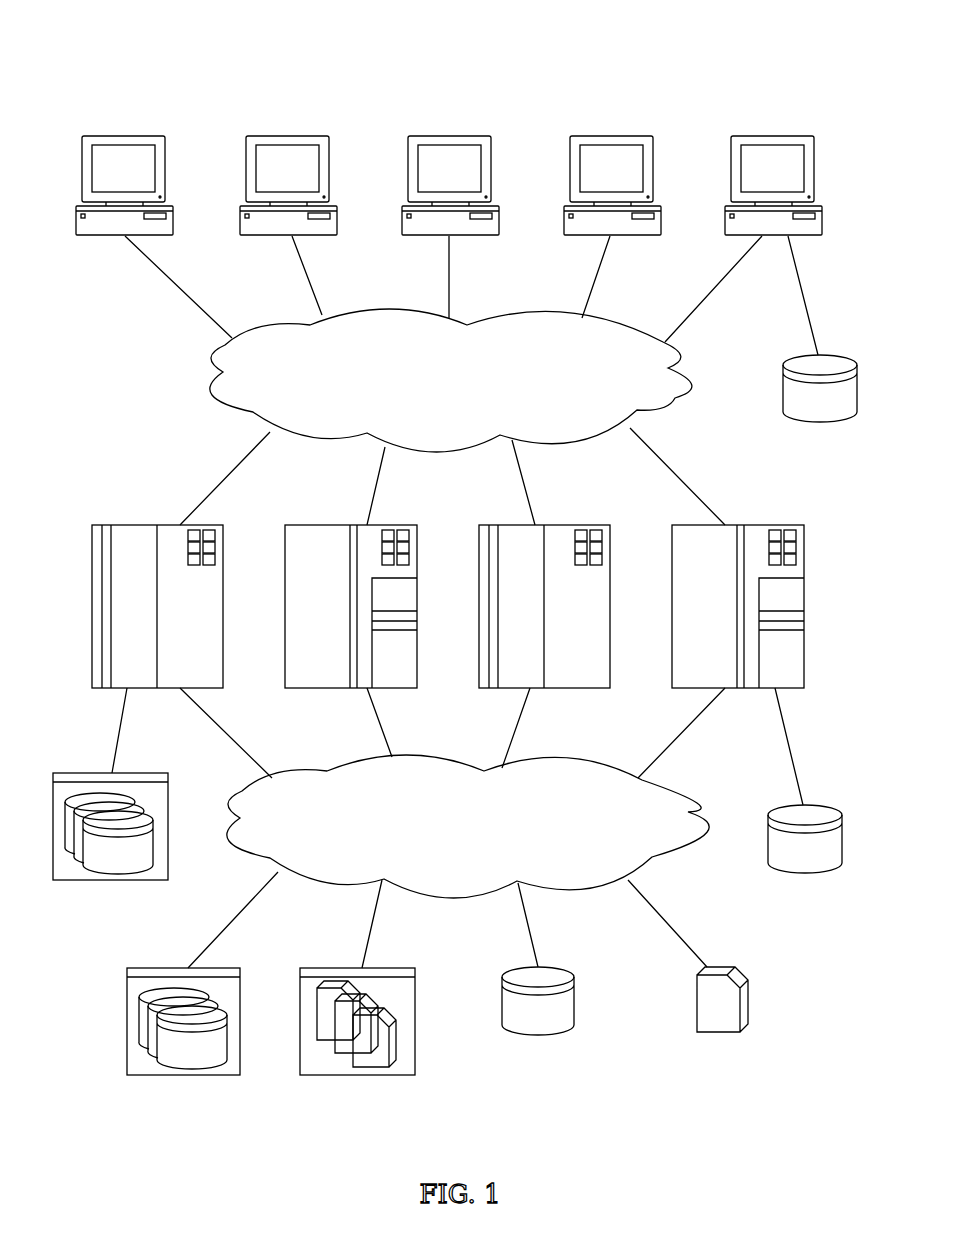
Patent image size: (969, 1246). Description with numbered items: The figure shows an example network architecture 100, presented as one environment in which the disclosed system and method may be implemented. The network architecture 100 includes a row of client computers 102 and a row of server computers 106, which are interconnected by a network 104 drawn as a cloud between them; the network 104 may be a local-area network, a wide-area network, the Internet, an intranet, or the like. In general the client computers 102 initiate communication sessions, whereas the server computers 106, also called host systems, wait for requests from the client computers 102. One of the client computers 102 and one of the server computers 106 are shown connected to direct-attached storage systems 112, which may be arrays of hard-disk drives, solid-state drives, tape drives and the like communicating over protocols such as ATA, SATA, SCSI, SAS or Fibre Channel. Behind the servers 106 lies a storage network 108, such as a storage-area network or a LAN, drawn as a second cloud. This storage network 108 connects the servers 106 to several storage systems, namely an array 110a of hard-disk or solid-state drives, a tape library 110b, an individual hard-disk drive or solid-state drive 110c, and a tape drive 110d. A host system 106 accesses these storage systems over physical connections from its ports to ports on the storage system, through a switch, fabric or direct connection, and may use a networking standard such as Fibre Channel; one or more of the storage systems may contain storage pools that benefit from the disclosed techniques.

The network architecture 100 is at (192, 74).
The client computer 102 is at (108, 175).
The network 104 is at (580, 391).
The server computer 106 is at (117, 612).
The storage network 108 is at (562, 837).
The array of hard-disk drives or solid-state drives 110a is at (183, 1075).
The tape library 110b is at (357, 1075).
The individual hard-disk drive or solid-state drive 110c is at (536, 1025).
The tape drive 110d is at (717, 1033).
The direct-attached storage system 112 is at (818, 412).